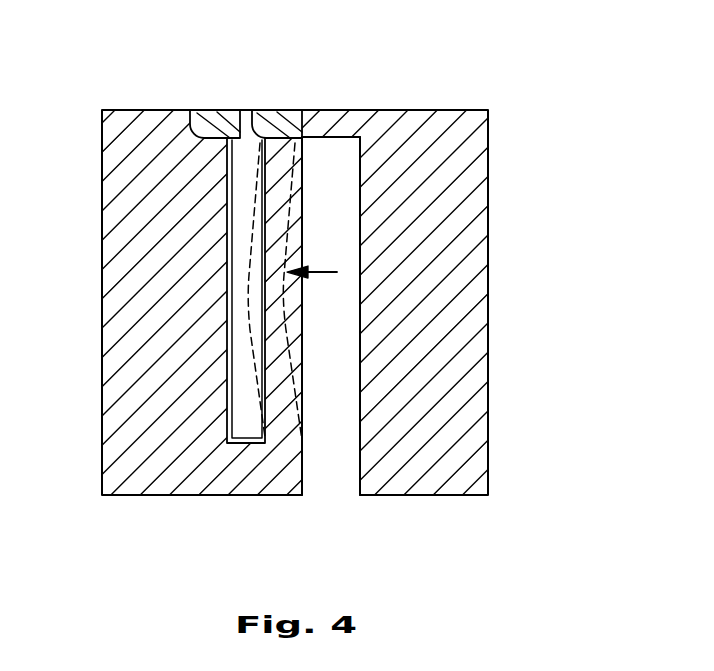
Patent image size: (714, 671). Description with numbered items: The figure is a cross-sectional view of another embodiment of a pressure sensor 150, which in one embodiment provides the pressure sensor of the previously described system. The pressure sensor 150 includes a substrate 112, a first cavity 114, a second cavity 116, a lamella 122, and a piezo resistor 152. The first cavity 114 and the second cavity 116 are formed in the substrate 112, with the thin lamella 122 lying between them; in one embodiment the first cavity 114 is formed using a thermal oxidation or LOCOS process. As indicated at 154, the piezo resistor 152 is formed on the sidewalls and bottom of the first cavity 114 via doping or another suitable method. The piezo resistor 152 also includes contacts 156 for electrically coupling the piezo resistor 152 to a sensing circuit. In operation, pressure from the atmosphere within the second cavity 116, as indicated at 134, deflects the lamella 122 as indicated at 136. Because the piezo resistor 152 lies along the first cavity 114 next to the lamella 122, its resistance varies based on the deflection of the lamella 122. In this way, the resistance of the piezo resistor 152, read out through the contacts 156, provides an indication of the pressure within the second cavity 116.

The pressure sensor 150 is at (533, 50).
The substrate 112 is at (486, 300).
The second cavity 116 is at (327, 468).
The first cavity 114 is at (240, 425).
The piezo resistor formation on sidewalls and bottom of first cavity 154 is at (230, 278).
The lamella 122 is at (280, 390).
The piezo resistor 152 is at (218, 110).
The contacts 156 is at (285, 110).
The deflection of lamella 136 is at (235, 220).
The pressure from atmosphere within second cavity 134 is at (317, 277).